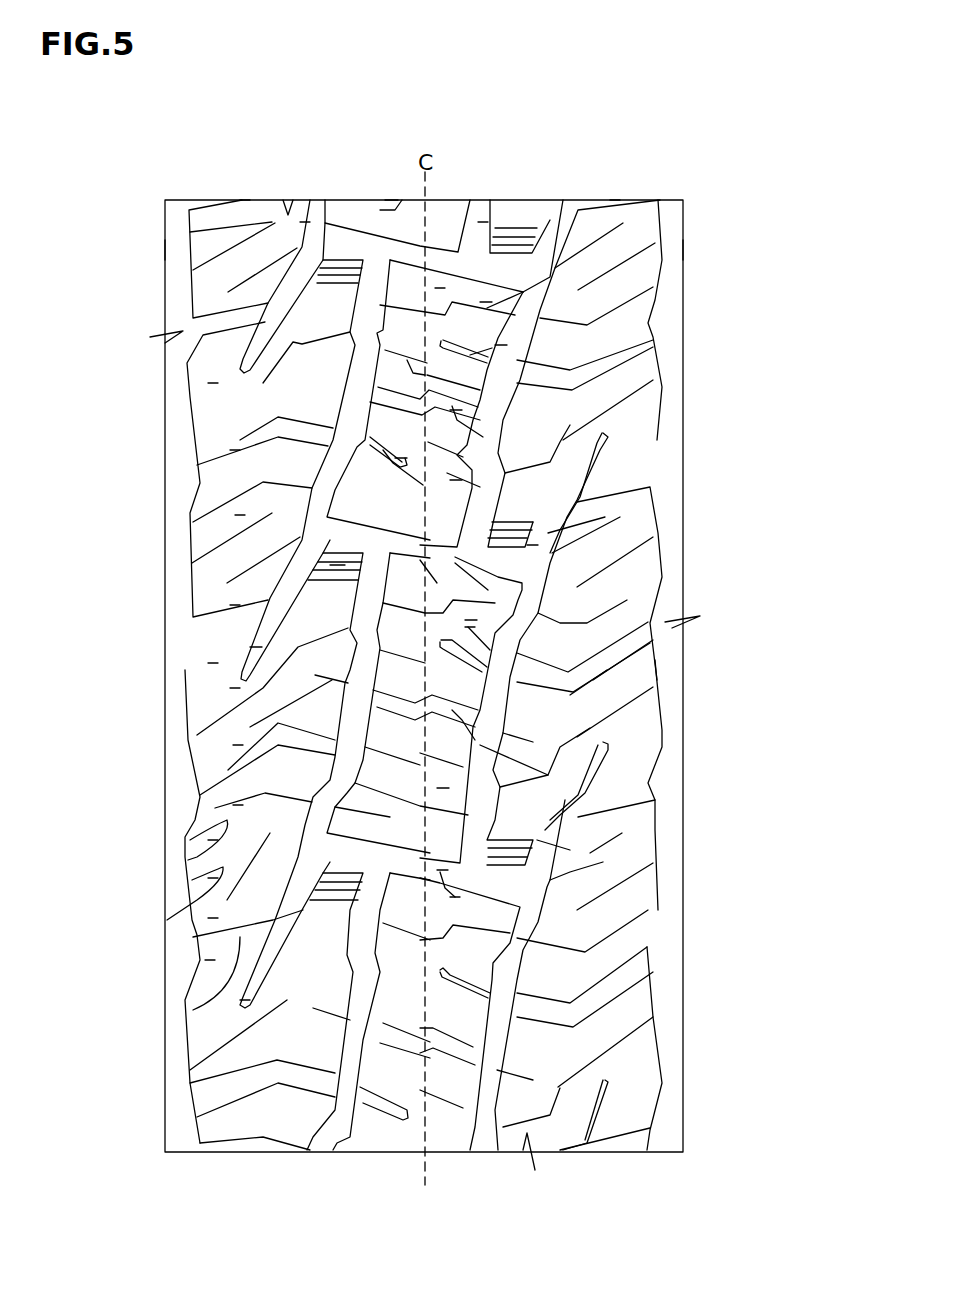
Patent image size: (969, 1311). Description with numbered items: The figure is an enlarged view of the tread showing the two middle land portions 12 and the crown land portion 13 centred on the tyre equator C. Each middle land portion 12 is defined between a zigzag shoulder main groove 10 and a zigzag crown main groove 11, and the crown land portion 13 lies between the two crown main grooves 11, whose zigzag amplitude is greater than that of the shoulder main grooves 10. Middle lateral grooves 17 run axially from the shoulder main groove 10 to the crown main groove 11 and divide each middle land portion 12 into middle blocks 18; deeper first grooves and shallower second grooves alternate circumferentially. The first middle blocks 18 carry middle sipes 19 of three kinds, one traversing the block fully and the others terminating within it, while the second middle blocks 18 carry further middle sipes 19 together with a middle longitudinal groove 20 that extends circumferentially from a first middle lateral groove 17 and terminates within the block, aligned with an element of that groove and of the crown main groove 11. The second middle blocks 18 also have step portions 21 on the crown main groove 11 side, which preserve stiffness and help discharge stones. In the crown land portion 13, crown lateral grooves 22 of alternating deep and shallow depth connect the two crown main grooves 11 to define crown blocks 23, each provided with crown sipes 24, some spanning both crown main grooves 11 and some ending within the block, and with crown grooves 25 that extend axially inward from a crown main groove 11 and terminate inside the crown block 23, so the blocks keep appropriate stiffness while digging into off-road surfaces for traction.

The shoulder main groove 10 is at (176, 240).
The crown main groove 11 is at (305, 220).
The middle land portion 12 is at (245, 196).
The crown land portion 13 is at (392, 196).
The middle lateral groove 17 is at (235, 450).
The middle block 18 is at (213, 383).
The middle sipe 19 is at (235, 688).
The middle longitudinal groove 20 is at (257, 647).
The step portion 21 is at (338, 565).
The crown lateral groove 22 is at (400, 458).
The crown block 23 is at (440, 288).
The crown sipe 24 is at (485, 302).
The crown groove 25 is at (500, 345).